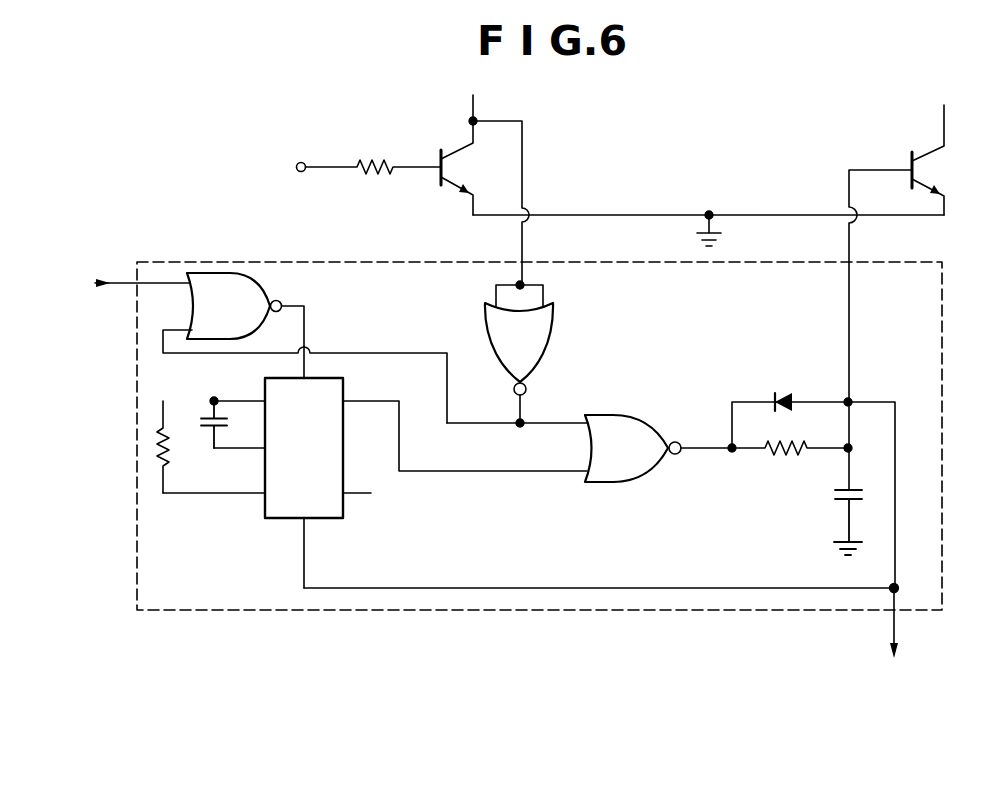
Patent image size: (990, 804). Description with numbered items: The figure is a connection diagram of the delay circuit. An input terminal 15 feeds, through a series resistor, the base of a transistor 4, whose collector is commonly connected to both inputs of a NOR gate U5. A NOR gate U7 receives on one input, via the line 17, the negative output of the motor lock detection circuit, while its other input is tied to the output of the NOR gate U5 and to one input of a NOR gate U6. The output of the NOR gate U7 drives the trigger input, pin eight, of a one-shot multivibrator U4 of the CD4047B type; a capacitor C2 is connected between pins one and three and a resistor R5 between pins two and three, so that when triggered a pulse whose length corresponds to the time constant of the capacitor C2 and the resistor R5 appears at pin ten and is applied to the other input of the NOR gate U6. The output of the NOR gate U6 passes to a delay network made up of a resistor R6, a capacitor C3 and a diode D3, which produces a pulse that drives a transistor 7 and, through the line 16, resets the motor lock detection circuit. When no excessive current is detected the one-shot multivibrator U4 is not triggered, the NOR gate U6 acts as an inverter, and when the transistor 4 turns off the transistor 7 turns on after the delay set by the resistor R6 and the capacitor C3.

The input terminal 15 is at (354, 168).
The transistor 4 is at (453, 167).
The transistor 7 is at (927, 168).
The line 17 is at (121, 289).
The line 16 is at (897, 631).
The NOR gate U7 is at (305, 348).
The NOR gate U5 is at (517, 354).
The one-shot multivibrator U4 is at (375, 482).
The NOR gate U6 is at (658, 448).
The resistor R5 is at (179, 447).
The capacitor C2 is at (228, 422).
The diode D3 is at (811, 477).
The resistor R6 is at (792, 462).
The capacitor C3 is at (862, 520).